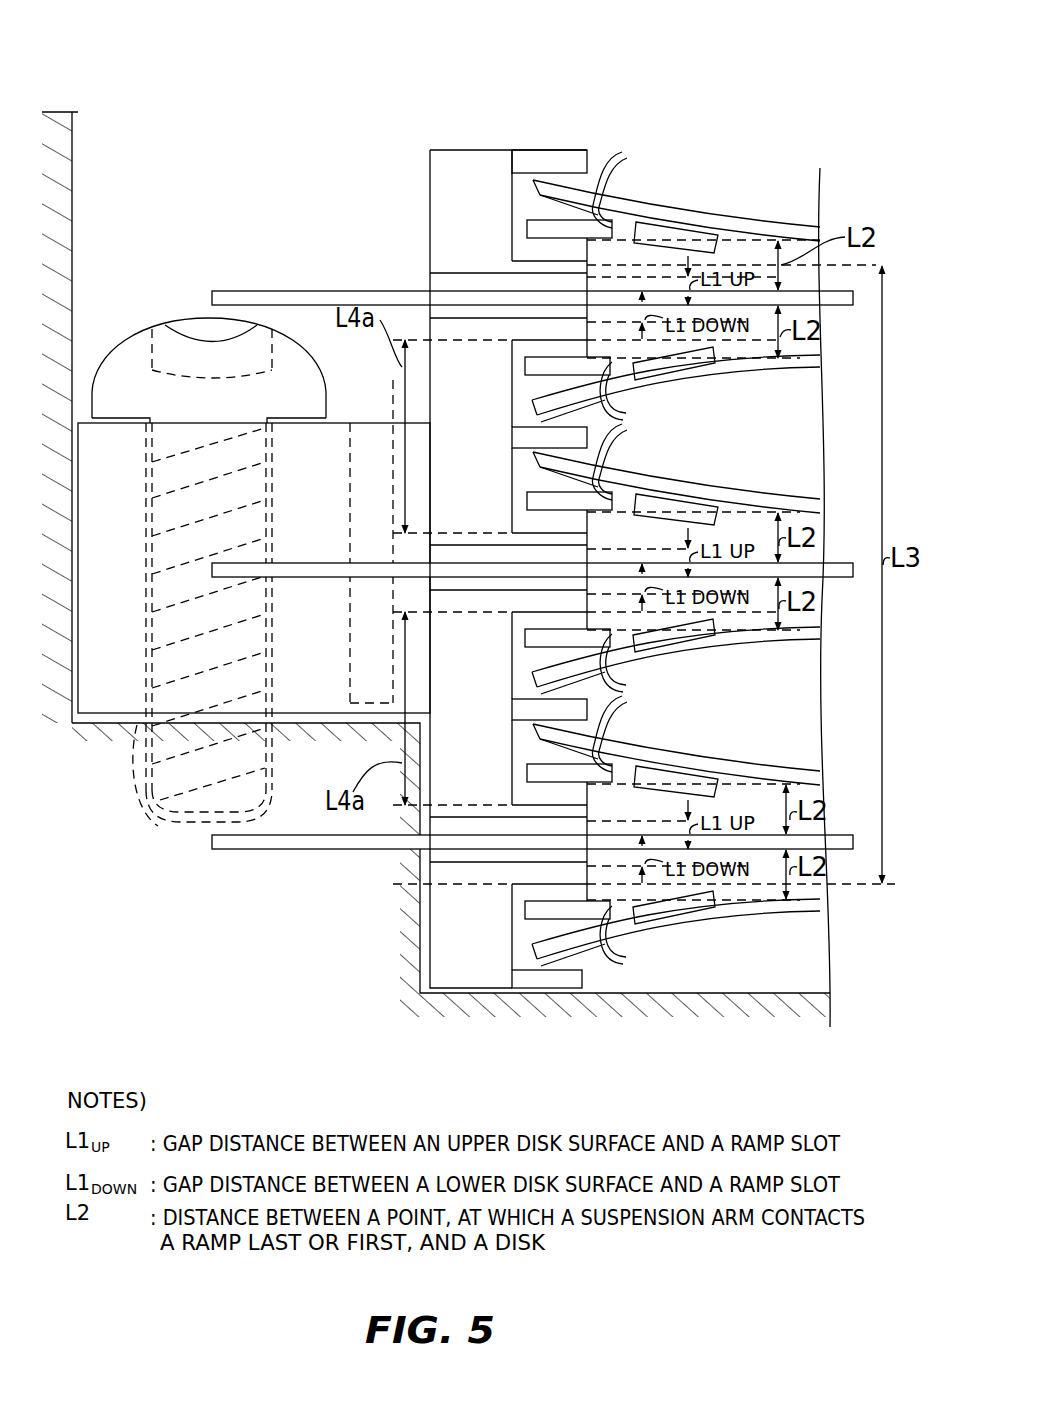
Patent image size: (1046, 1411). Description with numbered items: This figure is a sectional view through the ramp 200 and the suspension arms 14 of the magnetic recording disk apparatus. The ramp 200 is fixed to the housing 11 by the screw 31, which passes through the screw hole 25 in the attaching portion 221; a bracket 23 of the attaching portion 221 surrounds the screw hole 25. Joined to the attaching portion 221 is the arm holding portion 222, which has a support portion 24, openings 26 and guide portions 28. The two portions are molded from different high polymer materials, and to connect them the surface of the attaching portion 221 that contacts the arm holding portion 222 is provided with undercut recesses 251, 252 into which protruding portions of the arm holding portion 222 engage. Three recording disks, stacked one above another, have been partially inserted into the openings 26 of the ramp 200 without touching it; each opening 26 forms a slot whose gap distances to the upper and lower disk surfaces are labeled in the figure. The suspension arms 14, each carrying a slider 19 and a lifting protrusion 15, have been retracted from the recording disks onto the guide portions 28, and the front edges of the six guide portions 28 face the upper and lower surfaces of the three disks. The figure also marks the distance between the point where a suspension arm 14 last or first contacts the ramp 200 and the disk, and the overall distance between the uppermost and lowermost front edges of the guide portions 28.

The housing 11 is at (75, 737).
The suspension arm 14 is at (768, 225).
The lifting protrusion 15 is at (605, 559).
The slider 19 is at (668, 224).
The bracket 23 is at (298, 702).
The support portion 24 is at (452, 152).
The screw hole 25 is at (130, 772).
The opening 26 is at (428, 285).
The guide portion 28 is at (517, 223).
The screw 31 is at (128, 352).
The ramp 200 is at (452, 33).
The attaching portion 221 is at (308, 148).
The arm holding portion 222 is at (556, 89).
The recess 251 is at (413, 478).
The recess 252 is at (375, 427).